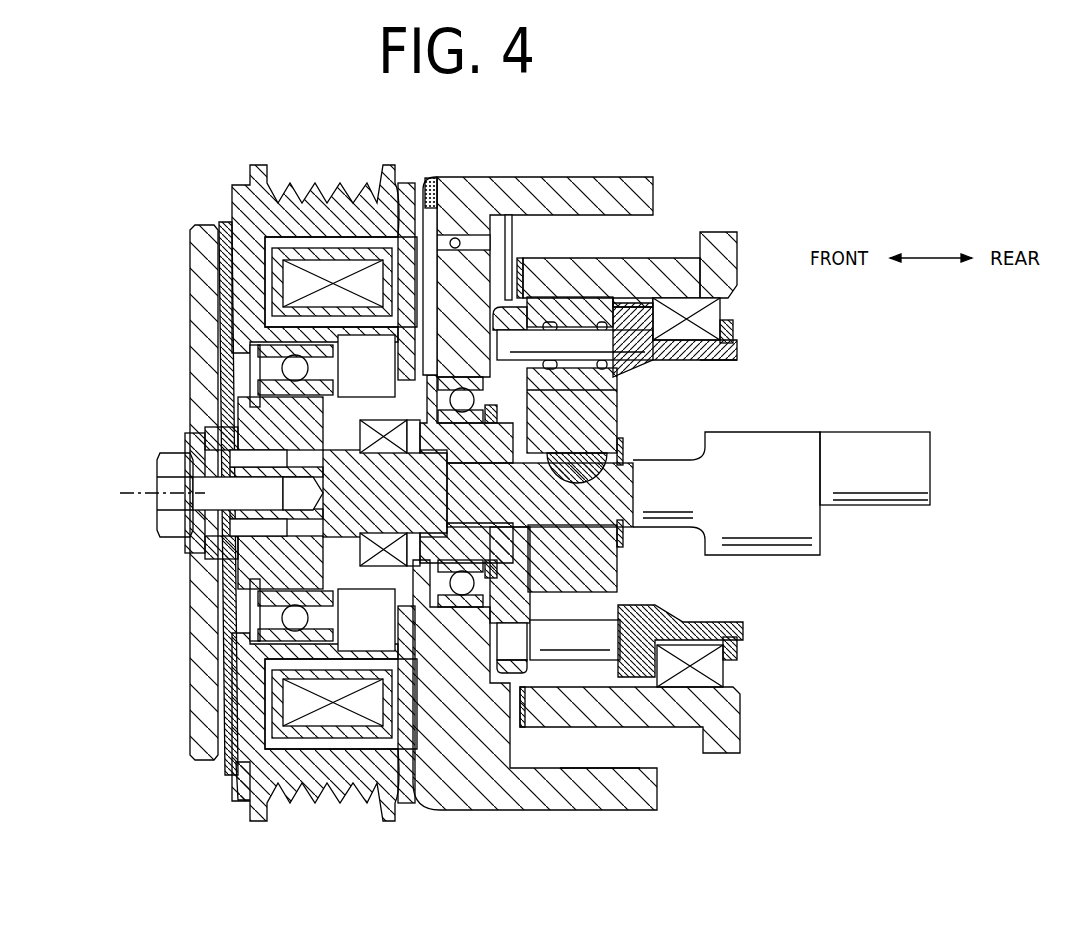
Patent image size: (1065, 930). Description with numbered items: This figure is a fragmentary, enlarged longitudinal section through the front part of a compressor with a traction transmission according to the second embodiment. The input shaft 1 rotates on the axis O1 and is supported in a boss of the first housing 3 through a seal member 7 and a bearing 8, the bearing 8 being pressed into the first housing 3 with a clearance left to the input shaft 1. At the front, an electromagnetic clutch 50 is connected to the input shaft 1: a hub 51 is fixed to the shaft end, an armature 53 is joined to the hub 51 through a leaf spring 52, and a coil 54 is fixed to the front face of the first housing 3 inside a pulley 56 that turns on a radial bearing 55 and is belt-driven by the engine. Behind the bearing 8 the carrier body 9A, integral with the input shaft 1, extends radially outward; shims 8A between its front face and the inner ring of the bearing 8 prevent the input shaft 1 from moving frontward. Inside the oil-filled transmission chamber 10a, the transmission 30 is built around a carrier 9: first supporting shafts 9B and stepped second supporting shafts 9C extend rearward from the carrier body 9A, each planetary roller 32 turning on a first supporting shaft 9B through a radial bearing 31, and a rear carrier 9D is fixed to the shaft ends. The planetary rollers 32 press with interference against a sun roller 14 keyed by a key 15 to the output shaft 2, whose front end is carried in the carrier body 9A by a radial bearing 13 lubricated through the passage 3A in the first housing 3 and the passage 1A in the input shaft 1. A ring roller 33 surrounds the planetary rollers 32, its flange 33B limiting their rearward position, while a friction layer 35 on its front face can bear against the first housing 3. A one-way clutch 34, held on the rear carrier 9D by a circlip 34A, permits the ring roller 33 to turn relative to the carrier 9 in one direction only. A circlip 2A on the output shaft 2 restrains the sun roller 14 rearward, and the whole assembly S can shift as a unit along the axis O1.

The electromagnetic clutch 50 is at (215, 192).
The pulley 56 is at (320, 184).
The coil 54 is at (318, 724).
The radial bearing 55 is at (287, 371).
The seal member 7 is at (370, 568).
The input shaft 1 is at (207, 548).
The passage 1A is at (423, 467).
The axis O1 is at (162, 493).
The hub 51 is at (197, 674).
The leaf spring 52 is at (223, 630).
The armature 53 is at (237, 788).
The passage 3A is at (455, 236).
The carrier body 9A is at (507, 298).
The shim 8A is at (492, 400).
The bearing 8 is at (456, 620).
The first housing 3 is at (551, 808).
The transmission chamber 10a is at (613, 762).
The transmission 30 is at (703, 769).
The carrier 9 is at (748, 632).
The second supporting shaft 9C is at (645, 628).
The first supporting shaft 9B is at (670, 368).
The rear carrier 9D is at (732, 364).
The one-way clutch 34 is at (722, 306).
The circlip 34A is at (736, 334).
The ring roller 33 is at (588, 273).
The flange 33B is at (626, 300).
The radial bearing 31 is at (556, 298).
The friction layer 35 is at (513, 300).
The planetary roller 32 is at (605, 382).
The key 15 is at (600, 438).
The sun roller 14 is at (612, 584).
The circlip 2A is at (627, 534).
The radial bearing 13 is at (511, 593).
The output shaft 2 is at (791, 434).
The assembly S is at (720, 230).